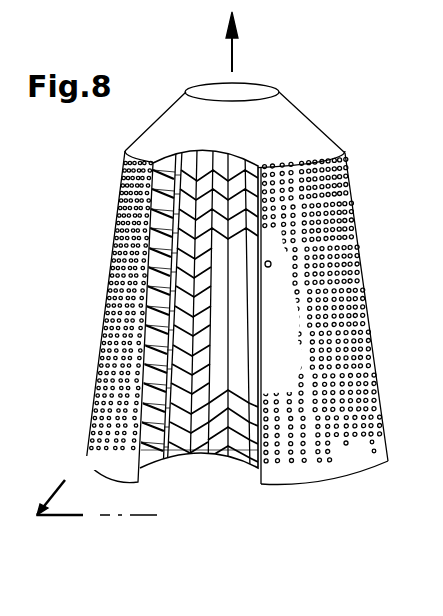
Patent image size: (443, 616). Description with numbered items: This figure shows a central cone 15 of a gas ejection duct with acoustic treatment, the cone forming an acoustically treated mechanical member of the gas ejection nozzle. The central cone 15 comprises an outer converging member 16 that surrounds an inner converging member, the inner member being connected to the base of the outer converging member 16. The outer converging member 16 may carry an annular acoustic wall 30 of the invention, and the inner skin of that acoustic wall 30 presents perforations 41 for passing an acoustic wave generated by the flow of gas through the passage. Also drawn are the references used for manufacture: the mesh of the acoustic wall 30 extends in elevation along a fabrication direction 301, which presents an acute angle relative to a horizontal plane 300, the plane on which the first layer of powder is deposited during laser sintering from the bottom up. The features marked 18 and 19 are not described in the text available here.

The central cone 15 is at (80, 322).
The outer converging member 16 is at (332, 465).
The downstream edge of panel 18 is at (290, 485).
The upstream end cap 19 is at (280, 92).
The acoustic wall 30 is at (374, 342).
The perforations 41 is at (117, 262).
The horizontal plane 300 is at (62, 517).
The fabrication direction 301 is at (231, 52).